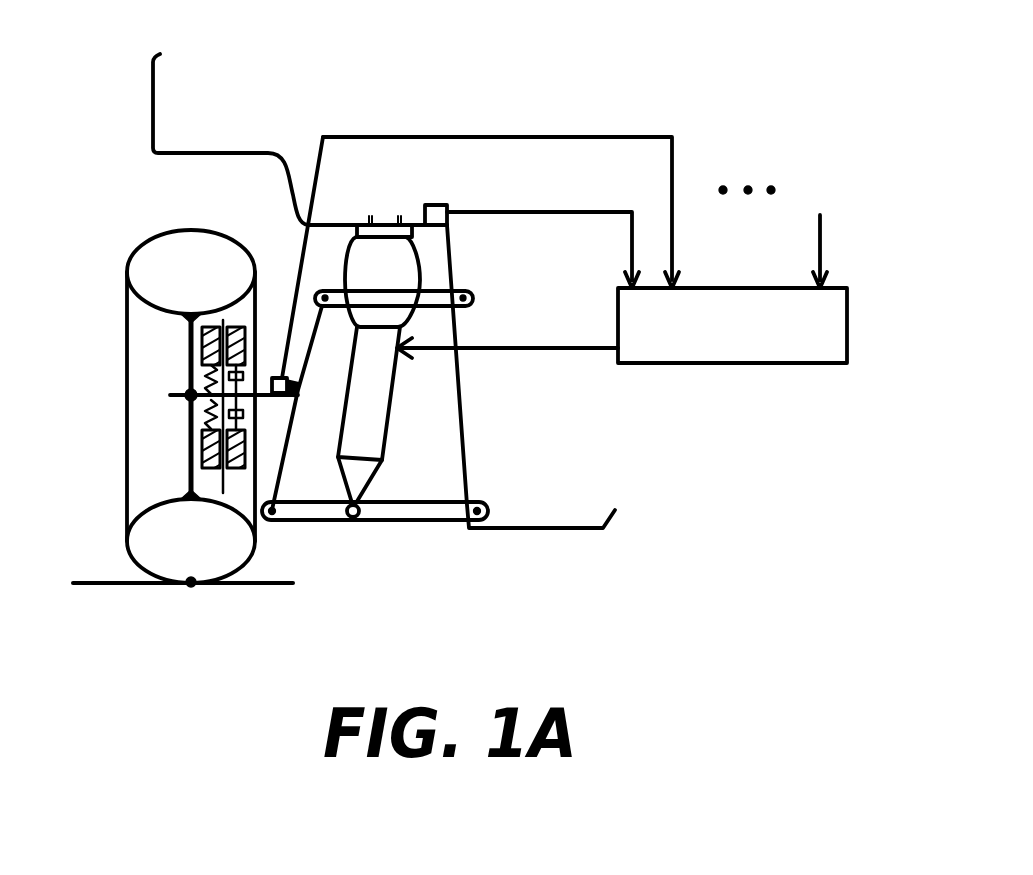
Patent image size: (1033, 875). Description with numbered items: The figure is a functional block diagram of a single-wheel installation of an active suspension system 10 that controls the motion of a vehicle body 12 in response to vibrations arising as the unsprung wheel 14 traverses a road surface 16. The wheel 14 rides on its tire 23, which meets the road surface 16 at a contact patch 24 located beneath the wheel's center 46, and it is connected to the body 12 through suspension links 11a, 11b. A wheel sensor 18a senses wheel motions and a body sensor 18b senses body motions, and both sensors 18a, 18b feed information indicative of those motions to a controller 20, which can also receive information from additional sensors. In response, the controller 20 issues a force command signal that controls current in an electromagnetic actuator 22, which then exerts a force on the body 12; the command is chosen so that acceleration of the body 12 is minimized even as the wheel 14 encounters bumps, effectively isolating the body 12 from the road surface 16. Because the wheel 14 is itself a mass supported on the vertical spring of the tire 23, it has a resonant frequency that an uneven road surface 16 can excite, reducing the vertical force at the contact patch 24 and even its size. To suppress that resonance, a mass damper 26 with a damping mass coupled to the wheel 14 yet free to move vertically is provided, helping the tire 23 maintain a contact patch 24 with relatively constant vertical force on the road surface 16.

The active suspension system 10 is at (680, 94).
The body 12 is at (152, 100).
The wheel 14 is at (187, 418).
The road surface 16 is at (282, 585).
The wheel sensor 18a is at (279, 393).
The body sensor 18b is at (432, 205).
The suspension link 11a is at (423, 522).
The suspension link 11b is at (462, 290).
The controller 20 is at (810, 365).
The electromagnetic actuator 22 is at (392, 415).
The tire 23 is at (130, 557).
The contact patch 24 is at (193, 586).
The mass damper 26 is at (246, 340).
The wheel's center 46 is at (188, 393).